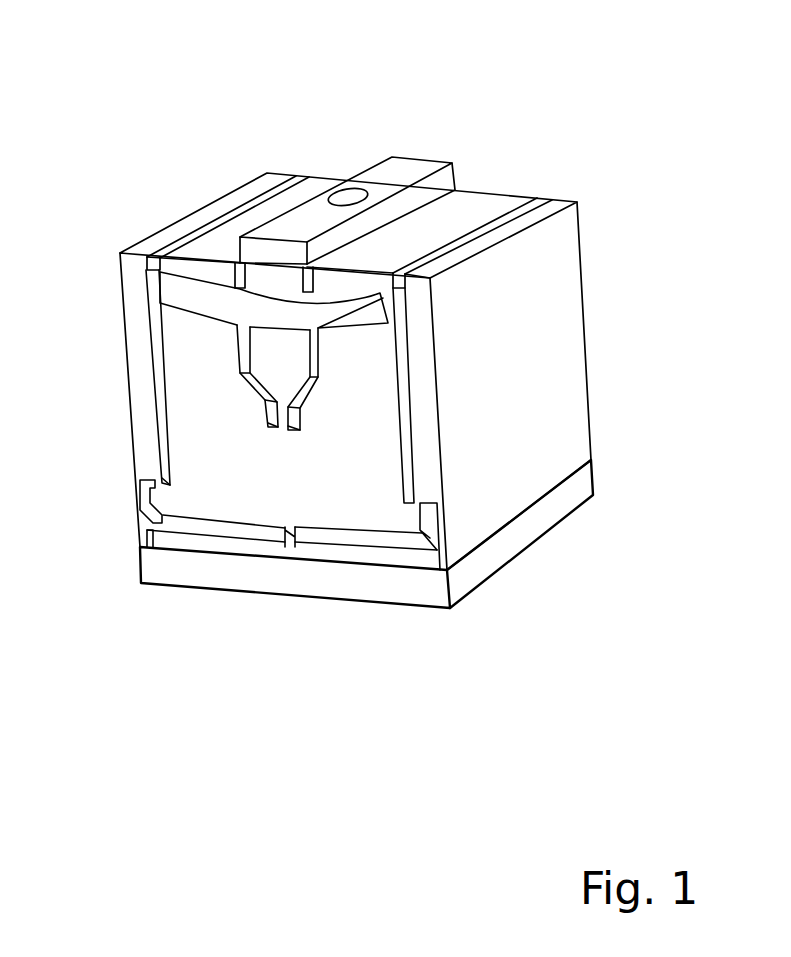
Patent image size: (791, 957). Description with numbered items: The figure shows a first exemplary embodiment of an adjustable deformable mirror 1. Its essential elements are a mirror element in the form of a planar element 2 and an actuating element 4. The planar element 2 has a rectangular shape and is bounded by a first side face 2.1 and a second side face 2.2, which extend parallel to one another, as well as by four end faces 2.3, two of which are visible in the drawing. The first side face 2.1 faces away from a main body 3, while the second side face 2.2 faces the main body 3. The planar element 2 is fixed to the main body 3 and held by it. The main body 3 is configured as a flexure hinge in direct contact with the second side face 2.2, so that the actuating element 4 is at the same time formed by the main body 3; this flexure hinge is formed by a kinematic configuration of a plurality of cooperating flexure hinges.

The mirror 1 is at (379, 361).
The planar element 2 is at (354, 585).
The first side face 2.1 is at (507, 585).
The second side face 2.2 is at (400, 556).
The end faces 2.3 is at (470, 583).
The main body 3 is at (618, 193).
The actuating element 4 is at (193, 402).